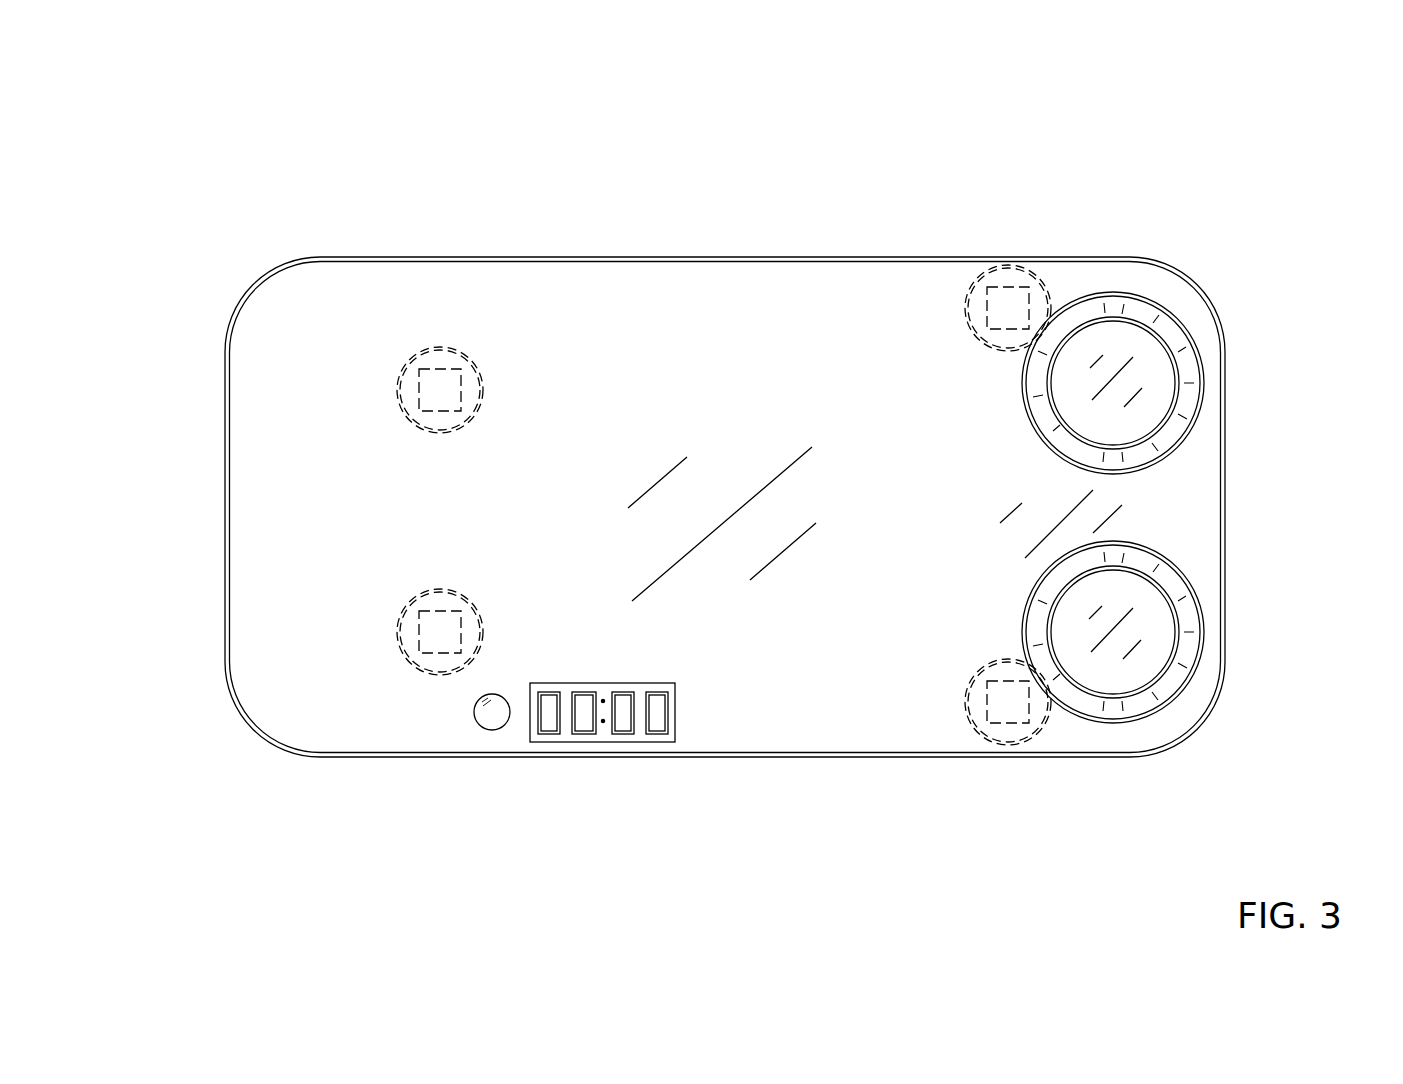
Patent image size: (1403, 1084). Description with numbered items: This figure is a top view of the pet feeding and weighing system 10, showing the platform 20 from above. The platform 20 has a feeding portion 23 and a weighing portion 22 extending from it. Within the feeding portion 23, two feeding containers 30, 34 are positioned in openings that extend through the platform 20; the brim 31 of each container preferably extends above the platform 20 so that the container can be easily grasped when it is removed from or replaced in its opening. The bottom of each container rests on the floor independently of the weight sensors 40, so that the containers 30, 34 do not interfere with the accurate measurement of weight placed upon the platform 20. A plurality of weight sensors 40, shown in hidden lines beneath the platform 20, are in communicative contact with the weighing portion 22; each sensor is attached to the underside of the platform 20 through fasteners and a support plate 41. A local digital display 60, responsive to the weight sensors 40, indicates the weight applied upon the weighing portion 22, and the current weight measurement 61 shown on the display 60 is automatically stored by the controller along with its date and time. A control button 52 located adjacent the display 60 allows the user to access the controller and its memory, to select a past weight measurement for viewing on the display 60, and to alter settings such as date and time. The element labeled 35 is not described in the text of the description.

The pet feeding and weighing system 10 is at (250, 170).
The platform 20 is at (258, 348).
The weighing portion 22 is at (820, 345).
The feeding portion 23 is at (1158, 510).
The feeding container 30 is at (1203, 318).
The brim 31 is at (1100, 292).
The feeding container 34 is at (1222, 651).
The second cup holder ring 35 is at (1157, 703).
The weight sensor 40 is at (440, 350).
The support plate 41 is at (455, 362).
The control button 52 is at (492, 730).
The digital display 60 is at (678, 742).
The current weight measurement 61 is at (628, 740).